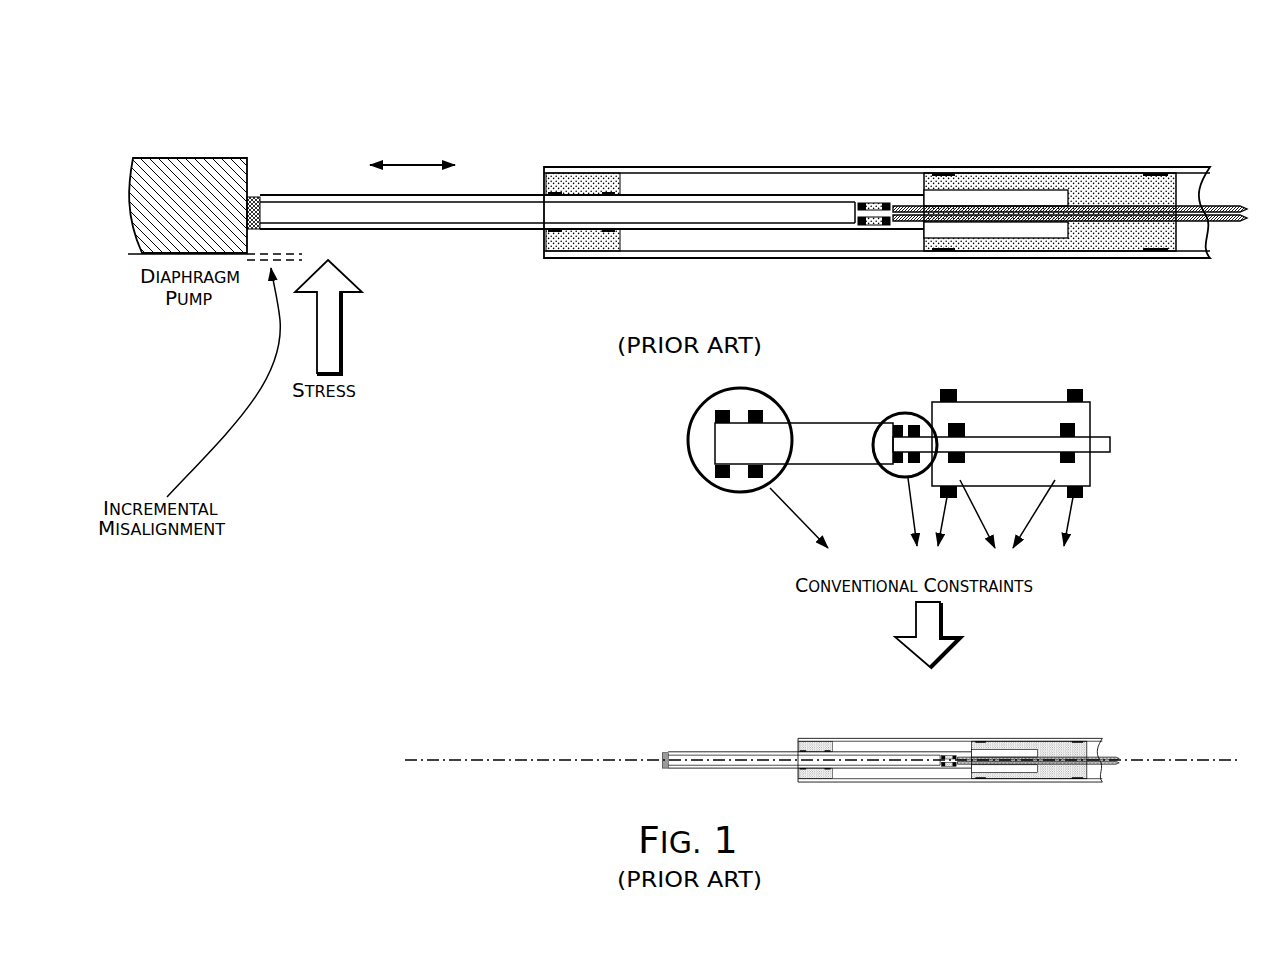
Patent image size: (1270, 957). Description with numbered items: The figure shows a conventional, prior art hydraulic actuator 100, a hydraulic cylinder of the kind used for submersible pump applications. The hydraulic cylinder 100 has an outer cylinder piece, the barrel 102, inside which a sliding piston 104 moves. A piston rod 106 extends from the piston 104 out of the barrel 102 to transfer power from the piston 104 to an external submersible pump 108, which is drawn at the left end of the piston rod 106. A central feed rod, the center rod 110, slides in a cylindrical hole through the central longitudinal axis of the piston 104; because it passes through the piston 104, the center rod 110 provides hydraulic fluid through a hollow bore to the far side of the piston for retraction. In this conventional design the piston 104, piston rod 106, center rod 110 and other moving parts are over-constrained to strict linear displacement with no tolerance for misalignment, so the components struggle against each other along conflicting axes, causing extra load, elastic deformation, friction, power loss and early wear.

The hydraulic actuator 100 is at (737, 96).
The barrel 102 is at (744, 156).
The piston 104 is at (1102, 238).
The piston rod 106 is at (777, 211).
The submersible pump 108 is at (206, 152).
The center rod 110 is at (997, 223).